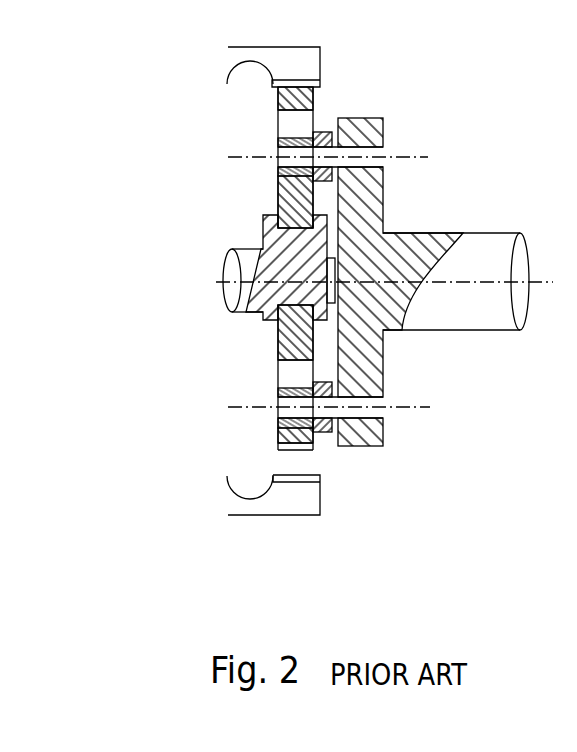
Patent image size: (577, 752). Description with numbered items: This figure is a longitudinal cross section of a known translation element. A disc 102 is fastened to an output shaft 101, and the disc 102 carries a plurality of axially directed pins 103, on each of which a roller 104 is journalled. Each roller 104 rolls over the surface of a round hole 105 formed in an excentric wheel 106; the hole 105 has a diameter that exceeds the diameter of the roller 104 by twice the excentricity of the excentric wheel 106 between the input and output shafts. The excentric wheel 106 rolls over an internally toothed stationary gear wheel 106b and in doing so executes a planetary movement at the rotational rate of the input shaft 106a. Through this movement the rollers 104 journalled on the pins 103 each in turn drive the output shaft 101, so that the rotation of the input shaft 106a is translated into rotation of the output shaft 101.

The output shaft 101 is at (460, 310).
The disc 102 is at (362, 352).
The axially directed pin 103 is at (338, 407).
The roller 104 is at (320, 432).
The round hole 105 is at (292, 370).
The excentric wheel 106 is at (292, 342).
The input shaft 106a is at (277, 272).
The internally toothed stationary gear wheel 106b is at (278, 63).